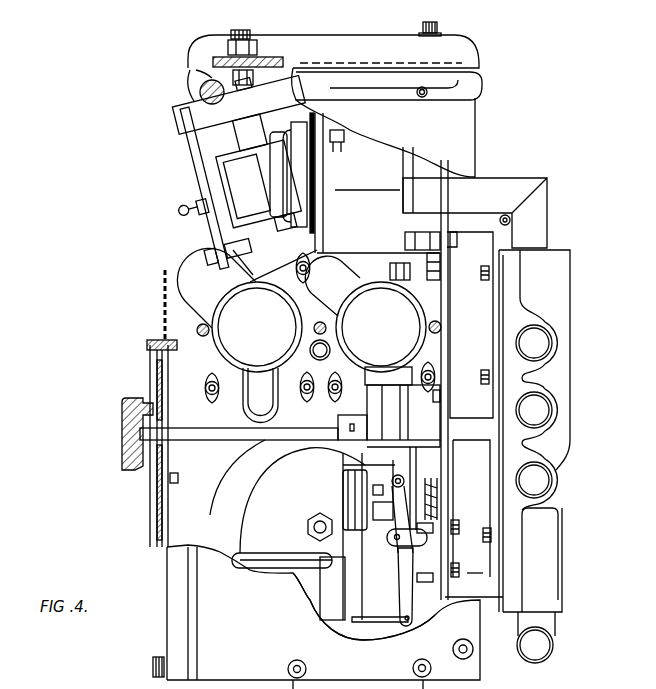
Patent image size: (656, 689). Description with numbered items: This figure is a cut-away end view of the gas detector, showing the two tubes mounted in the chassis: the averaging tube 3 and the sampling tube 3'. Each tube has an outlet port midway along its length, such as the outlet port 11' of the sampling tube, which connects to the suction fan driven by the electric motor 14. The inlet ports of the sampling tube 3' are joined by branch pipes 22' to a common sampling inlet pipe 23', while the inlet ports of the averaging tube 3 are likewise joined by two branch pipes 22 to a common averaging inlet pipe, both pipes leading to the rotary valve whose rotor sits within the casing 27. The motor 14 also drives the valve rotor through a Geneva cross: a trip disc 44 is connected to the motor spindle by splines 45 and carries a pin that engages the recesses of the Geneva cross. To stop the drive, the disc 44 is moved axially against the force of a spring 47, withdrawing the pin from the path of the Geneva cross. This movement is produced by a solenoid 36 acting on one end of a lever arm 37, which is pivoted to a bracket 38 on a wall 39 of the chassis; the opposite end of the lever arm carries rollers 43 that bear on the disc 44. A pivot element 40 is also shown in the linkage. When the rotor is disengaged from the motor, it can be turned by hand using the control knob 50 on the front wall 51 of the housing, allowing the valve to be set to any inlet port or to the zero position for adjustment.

The averaging tube 3 is at (372, 327).
The sampling tube 3' is at (268, 313).
The outlet port 11' is at (239, 404).
The electric motor 14 is at (290, 502).
The branch pipes 22 is at (257, 327).
The branch pipes 22' is at (216, 290).
The sampling inlet pipe 23' is at (475, 200).
The casing 27 is at (513, 543).
The solenoid 36 is at (320, 612).
The lever arm 37 is at (413, 607).
The bracket 38 is at (423, 542).
The wall 39 is at (446, 492).
The pivot pin 40 is at (397, 524).
The rollers 43 is at (363, 467).
The disc 44 is at (412, 460).
The splines 45 is at (376, 489).
The spring 47 is at (433, 477).
The control knob 50 is at (125, 470).
The front wall 51 is at (164, 538).